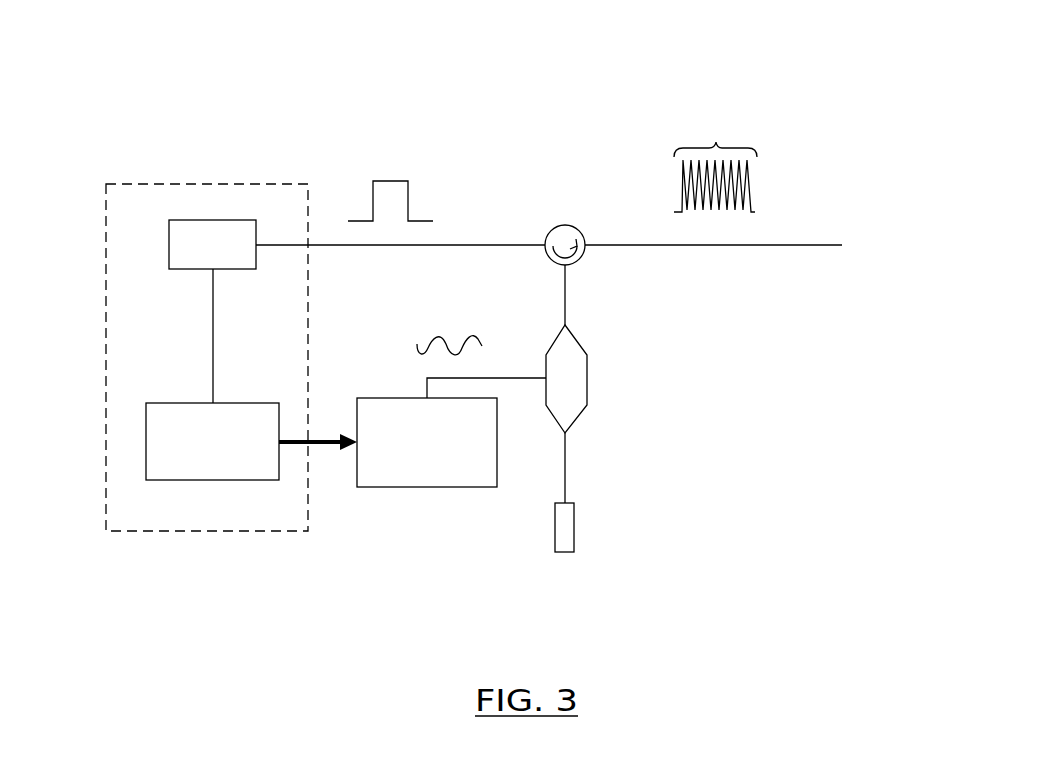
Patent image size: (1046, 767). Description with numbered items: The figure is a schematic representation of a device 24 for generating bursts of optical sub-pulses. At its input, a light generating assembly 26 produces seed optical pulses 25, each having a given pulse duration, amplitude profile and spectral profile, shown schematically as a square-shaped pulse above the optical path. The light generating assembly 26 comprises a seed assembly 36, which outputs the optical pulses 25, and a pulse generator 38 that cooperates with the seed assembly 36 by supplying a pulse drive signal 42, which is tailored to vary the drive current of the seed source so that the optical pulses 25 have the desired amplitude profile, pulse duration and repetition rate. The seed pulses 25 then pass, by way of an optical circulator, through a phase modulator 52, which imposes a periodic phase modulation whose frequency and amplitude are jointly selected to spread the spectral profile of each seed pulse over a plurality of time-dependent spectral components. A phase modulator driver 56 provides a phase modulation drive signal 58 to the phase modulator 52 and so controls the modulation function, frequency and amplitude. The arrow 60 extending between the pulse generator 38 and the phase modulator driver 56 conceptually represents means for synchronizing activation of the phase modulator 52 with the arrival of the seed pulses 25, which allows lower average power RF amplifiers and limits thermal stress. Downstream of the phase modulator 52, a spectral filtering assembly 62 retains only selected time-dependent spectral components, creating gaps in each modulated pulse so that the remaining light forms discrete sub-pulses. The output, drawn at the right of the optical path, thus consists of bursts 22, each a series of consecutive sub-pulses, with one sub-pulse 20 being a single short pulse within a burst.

The device 24 is at (314, 86).
The seed optical pulses 25 is at (408, 198).
The sub-pulse 20 is at (682, 178).
The bursts 22 is at (715, 134).
The light generating assembly 26 is at (162, 531).
The seed assembly 36 is at (169, 233).
The pulse drive signal 42 is at (213, 344).
The pulse generator 38 is at (146, 436).
The arrow 60 is at (322, 447).
The phase modulator driver 56 is at (422, 487).
The phase modulation drive signal 58 is at (443, 332).
The phase modulator 52 is at (587, 362).
The spectral filtering assembly 62 is at (574, 525).